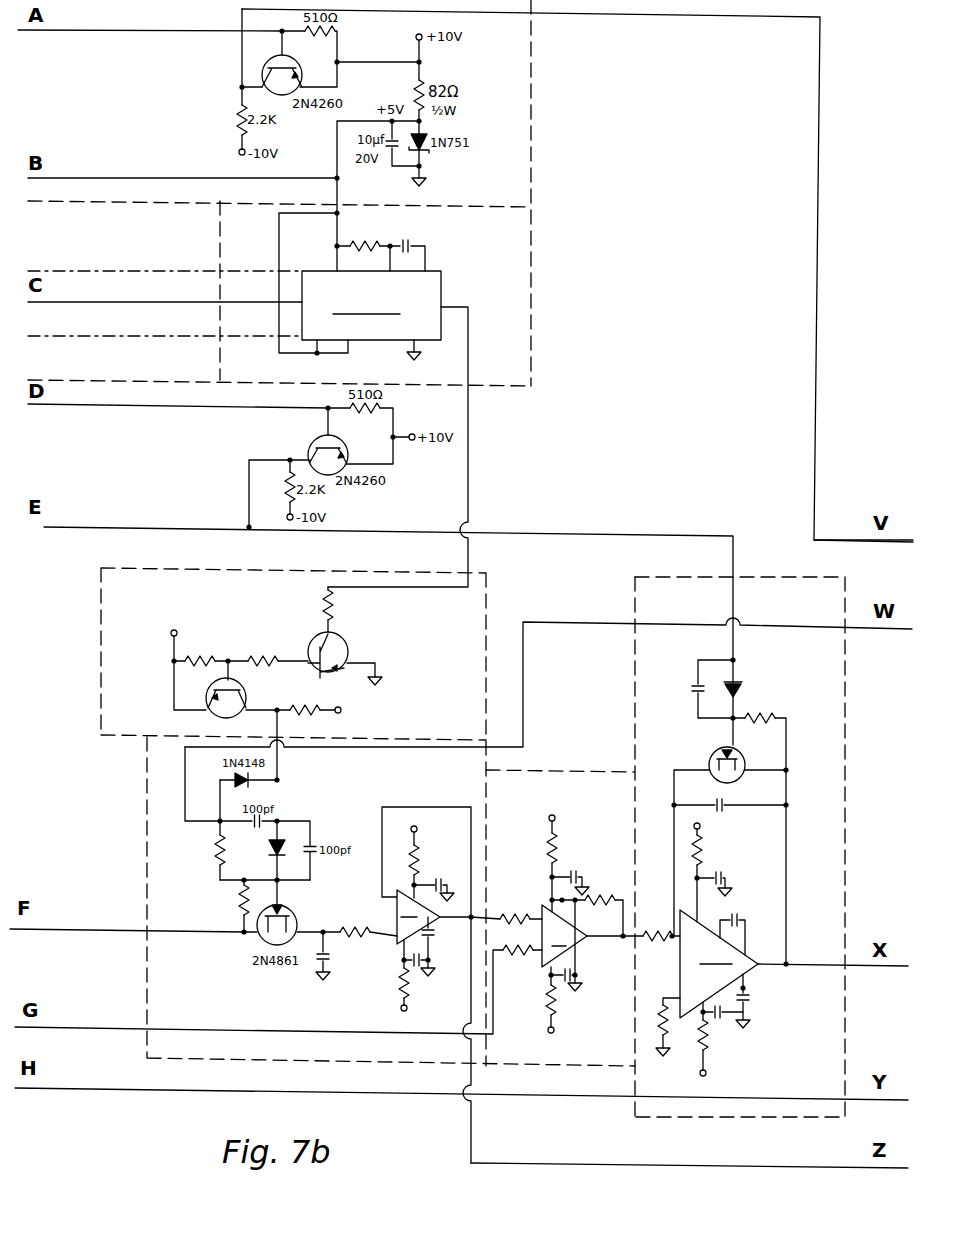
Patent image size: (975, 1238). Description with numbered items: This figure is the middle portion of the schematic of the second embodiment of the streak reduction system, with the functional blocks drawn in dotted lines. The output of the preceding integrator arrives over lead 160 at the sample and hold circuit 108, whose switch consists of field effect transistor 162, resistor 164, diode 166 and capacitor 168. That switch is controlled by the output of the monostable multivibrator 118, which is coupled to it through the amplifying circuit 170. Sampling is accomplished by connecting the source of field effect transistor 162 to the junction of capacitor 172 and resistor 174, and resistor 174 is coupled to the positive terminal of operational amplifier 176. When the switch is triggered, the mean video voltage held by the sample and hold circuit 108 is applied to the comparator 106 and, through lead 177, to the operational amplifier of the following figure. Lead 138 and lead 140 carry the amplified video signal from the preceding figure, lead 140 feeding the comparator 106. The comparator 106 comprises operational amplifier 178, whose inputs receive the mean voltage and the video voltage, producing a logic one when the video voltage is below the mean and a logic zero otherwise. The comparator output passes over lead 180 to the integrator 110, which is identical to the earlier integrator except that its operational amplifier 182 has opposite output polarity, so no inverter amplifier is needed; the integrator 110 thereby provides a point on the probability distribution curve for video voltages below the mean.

The comparator 106 is at (530, 838).
The sample and hold circuit 108 is at (425, 791).
The integrator 110 is at (816, 668).
The monostable multivibrator 118 is at (500, 260).
The lead 138 is at (137, 1090).
The lead 140 is at (100, 1030).
The lead 160 is at (173, 930).
The field effect transistor 162 is at (259, 940).
The resistor 164 is at (215, 838).
The diode 166 is at (283, 838).
The capacitor 168 is at (312, 840).
The amplifying circuit 170 is at (415, 624).
The capacitor 172 is at (316, 963).
The resistor 174 is at (334, 930).
The operational amplifier 176 is at (400, 950).
The lead 177 is at (618, 1165).
The operational amplifier 178 is at (544, 968).
The lead 180 is at (637, 941).
The integrator operational amplifier 182 is at (680, 957).